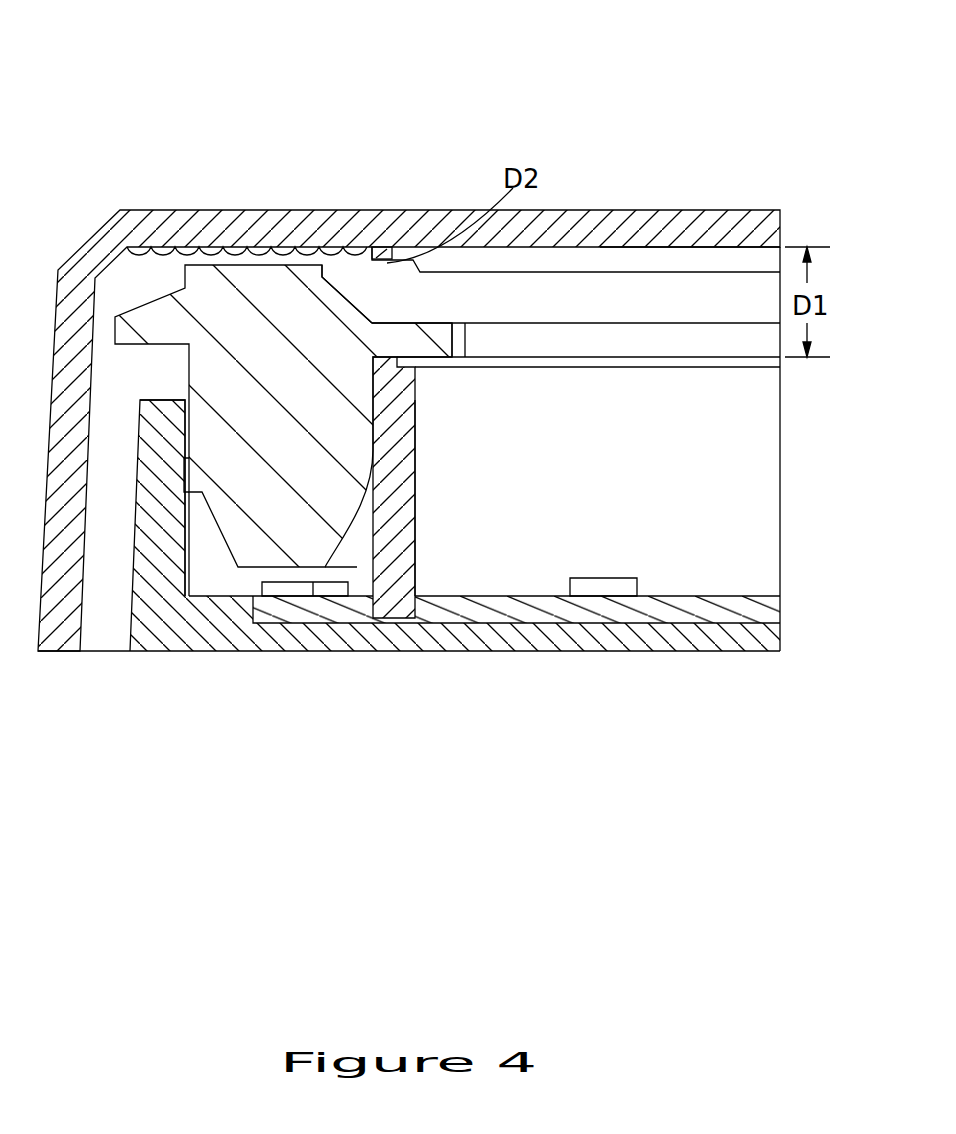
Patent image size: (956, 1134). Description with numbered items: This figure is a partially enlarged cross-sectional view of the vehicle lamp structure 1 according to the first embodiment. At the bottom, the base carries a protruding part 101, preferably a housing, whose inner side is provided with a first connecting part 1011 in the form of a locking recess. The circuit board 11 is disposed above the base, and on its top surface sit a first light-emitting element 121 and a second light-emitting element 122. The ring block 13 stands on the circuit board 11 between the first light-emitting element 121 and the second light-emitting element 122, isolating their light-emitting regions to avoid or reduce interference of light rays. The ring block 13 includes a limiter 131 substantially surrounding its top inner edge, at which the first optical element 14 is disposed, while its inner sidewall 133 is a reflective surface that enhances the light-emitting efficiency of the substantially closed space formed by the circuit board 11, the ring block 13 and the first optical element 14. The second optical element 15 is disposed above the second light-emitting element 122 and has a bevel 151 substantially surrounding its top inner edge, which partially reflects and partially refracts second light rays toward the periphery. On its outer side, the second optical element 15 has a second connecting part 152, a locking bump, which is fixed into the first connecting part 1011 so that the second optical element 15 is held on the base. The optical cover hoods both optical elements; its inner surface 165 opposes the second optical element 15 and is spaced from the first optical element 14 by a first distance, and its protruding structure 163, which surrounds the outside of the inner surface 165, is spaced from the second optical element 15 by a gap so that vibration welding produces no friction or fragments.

The vehicle lamp structure 1 is at (492, 53).
The circuit board 11 is at (343, 623).
The ring block 13 is at (576, 527).
The first optical element 14 is at (543, 358).
The second optical element 15 is at (283, 385).
The protruding part 101 is at (418, 555).
The first connecting part 1011 is at (183, 480).
The first light-emitting element 121 is at (605, 587).
The second light-emitting element 122 is at (290, 592).
The limiter 131 is at (410, 367).
The inner sidewall 133 is at (415, 468).
The bevel 151 is at (347, 300).
The second connecting part 152 is at (190, 470).
The protruding structure 163 is at (388, 263).
The inner surface 165 is at (753, 248).